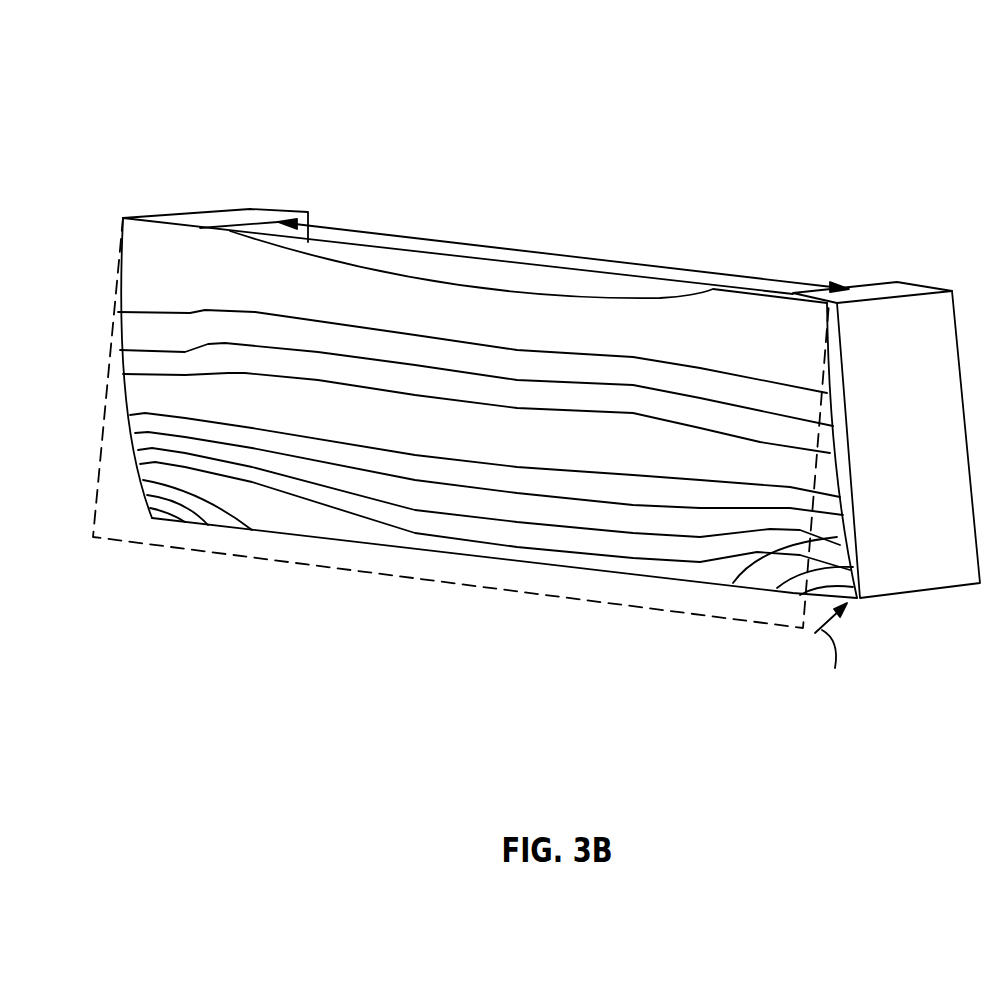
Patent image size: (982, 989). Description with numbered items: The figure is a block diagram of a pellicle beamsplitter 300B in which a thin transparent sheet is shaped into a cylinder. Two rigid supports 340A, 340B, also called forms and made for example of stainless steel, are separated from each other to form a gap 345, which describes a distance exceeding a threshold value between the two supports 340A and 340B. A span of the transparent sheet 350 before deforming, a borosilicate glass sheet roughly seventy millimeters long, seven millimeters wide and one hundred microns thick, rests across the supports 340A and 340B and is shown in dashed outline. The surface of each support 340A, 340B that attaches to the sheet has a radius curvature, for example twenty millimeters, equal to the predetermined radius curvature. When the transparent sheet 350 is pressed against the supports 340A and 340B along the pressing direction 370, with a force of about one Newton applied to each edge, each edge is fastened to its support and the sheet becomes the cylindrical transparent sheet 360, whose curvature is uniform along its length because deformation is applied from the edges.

The pellicle beamsplitter 300B is at (22, 52).
The support 340A is at (232, 217).
The support 340B is at (867, 293).
The gap 345 is at (563, 247).
The transparent sheet before deforming 350 is at (625, 607).
The cylindrical transparent sheet 360 is at (390, 498).
The pressing direction 370 is at (826, 668).